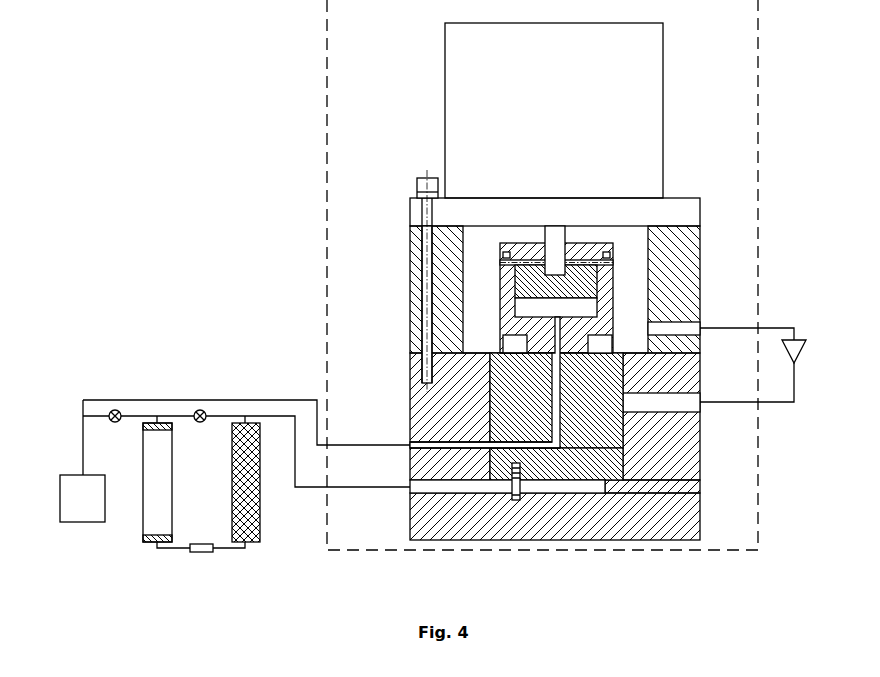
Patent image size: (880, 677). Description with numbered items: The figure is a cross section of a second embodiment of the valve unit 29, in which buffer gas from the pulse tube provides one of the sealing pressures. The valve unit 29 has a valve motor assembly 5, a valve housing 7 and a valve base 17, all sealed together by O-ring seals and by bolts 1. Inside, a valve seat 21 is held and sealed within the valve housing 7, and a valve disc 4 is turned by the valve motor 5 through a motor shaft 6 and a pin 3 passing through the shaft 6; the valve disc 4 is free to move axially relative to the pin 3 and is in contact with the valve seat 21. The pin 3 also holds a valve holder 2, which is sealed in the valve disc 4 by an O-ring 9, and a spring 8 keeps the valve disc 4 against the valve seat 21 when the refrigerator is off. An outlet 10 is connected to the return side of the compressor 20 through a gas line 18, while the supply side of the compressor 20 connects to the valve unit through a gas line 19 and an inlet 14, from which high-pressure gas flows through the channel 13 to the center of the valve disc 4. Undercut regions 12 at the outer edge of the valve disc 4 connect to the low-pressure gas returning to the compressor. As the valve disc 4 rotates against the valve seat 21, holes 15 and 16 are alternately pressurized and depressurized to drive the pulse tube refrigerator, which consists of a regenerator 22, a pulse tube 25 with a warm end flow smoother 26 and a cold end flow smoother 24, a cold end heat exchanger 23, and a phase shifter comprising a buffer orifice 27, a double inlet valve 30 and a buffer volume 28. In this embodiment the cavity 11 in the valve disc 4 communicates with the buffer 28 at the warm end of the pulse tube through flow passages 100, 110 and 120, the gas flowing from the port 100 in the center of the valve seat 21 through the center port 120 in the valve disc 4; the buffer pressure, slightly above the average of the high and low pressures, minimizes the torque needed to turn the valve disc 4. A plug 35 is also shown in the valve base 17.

The bolts 1 is at (425, 185).
The valve holder 2 is at (497, 250).
The pin 3 is at (497, 265).
The valve disc 4 is at (497, 313).
The valve motor assembly 5 is at (648, 45).
The motor shaft 6 is at (565, 232).
The valve housing 7 is at (700, 240).
The spring 8 is at (607, 255).
The O-ring 9 is at (600, 287).
The outlet 10 is at (690, 328).
The cavity 11 is at (568, 308).
The regions 12 is at (512, 345).
The channel 13 is at (590, 368).
The inlet 14 is at (643, 405).
The hole 15 is at (517, 397).
The hole 16 is at (433, 488).
The valve base 17 is at (683, 500).
The gas line 18 is at (747, 326).
The gas line 19 is at (747, 384).
The compressor 20 is at (803, 355).
The valve seat 21 is at (613, 467).
The regenerator 22 is at (258, 479).
The cold end heat exchanger 23 is at (201, 560).
The cold end flow smoother 24 is at (147, 540).
The pulse tube 25 is at (181, 482).
The warm end flow smoother 26 is at (145, 432).
The buffer orifice 27 is at (105, 426).
The buffer volume 28 is at (82, 461).
The valve unit 29 is at (757, 82).
The double inlet valve 30 is at (201, 427).
The plug screw 35 is at (515, 500).
The flow passage 100 is at (552, 422).
The flow passage 110 is at (450, 445).
The center port 120 is at (505, 350).